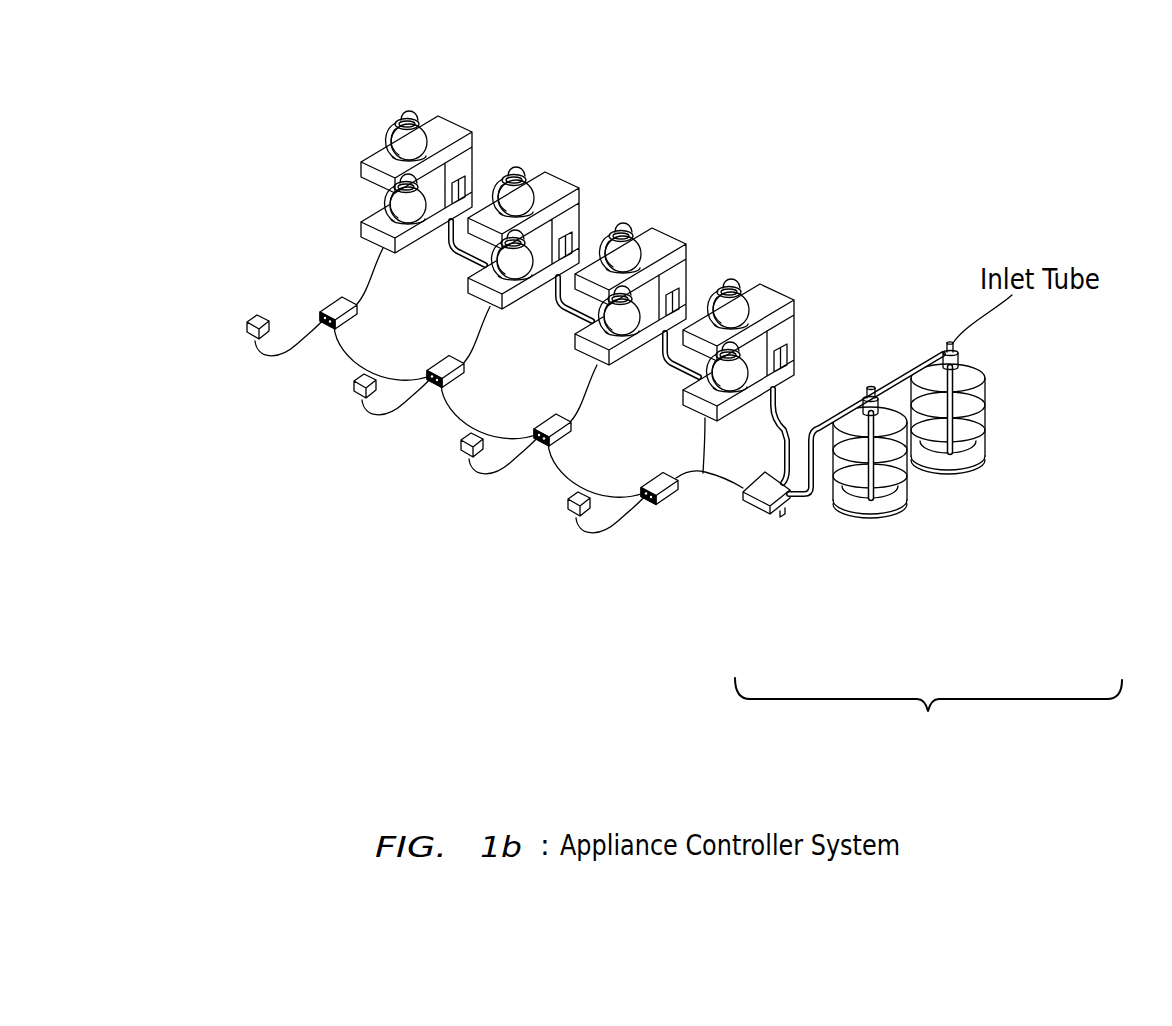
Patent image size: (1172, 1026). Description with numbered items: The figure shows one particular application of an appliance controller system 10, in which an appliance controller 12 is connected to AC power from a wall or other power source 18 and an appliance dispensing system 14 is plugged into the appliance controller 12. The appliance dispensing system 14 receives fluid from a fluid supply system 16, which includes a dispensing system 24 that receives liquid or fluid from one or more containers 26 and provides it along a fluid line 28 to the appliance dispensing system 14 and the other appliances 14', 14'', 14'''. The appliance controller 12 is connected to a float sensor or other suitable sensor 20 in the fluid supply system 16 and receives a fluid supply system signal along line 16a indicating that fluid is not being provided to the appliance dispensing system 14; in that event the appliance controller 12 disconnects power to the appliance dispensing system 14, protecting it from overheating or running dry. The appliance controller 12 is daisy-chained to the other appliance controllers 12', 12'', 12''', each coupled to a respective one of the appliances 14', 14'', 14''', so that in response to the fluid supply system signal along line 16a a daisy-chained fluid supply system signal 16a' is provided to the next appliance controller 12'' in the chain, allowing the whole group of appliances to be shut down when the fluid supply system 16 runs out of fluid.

The appliance controller system 10 is at (343, 611).
The appliance controller 12 is at (319, 384).
The appliance controller 12' is at (488, 373).
The appliance controller 12'' is at (597, 406).
The appliance controller 12''' is at (630, 509).
The appliance dispensing system 14 is at (423, 150).
The appliance 14' is at (605, 192).
The appliance 14'' is at (637, 266).
The appliance 14''' is at (738, 312).
The fluid supply system 16 is at (928, 712).
The fluid supply system signal line 16a is at (675, 603).
The daisy-chained fluid supply system signal 16a' is at (548, 487).
The power source 18 is at (259, 318).
The sensor 20 is at (870, 388).
The dispensing system 24 is at (772, 515).
The containers 26 is at (974, 470).
The fluid line 28 is at (786, 425).